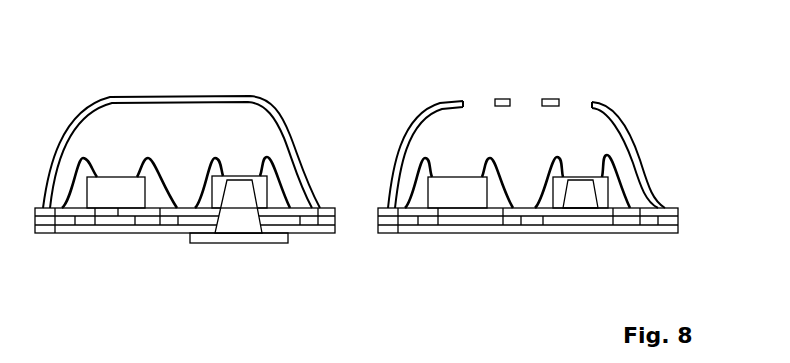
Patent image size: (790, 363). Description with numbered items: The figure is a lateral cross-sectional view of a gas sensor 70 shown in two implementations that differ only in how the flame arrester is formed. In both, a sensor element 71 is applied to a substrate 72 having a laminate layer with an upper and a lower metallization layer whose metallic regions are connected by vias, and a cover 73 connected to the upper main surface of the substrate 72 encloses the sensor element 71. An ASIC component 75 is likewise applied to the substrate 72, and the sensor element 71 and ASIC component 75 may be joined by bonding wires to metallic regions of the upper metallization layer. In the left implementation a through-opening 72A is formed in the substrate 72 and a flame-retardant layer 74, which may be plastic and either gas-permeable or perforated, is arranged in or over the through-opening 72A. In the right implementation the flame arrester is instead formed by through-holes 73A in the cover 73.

The gas sensor 70 is at (609, 22).
The sensor element 71 is at (260, 187).
The substrate 72 is at (147, 225).
The through-opening 72A is at (226, 215).
The cover 73 is at (173, 101).
The through-holes 73A is at (576, 103).
The flame-retardant layer 74 is at (280, 240).
The ASIC component 75 is at (123, 202).